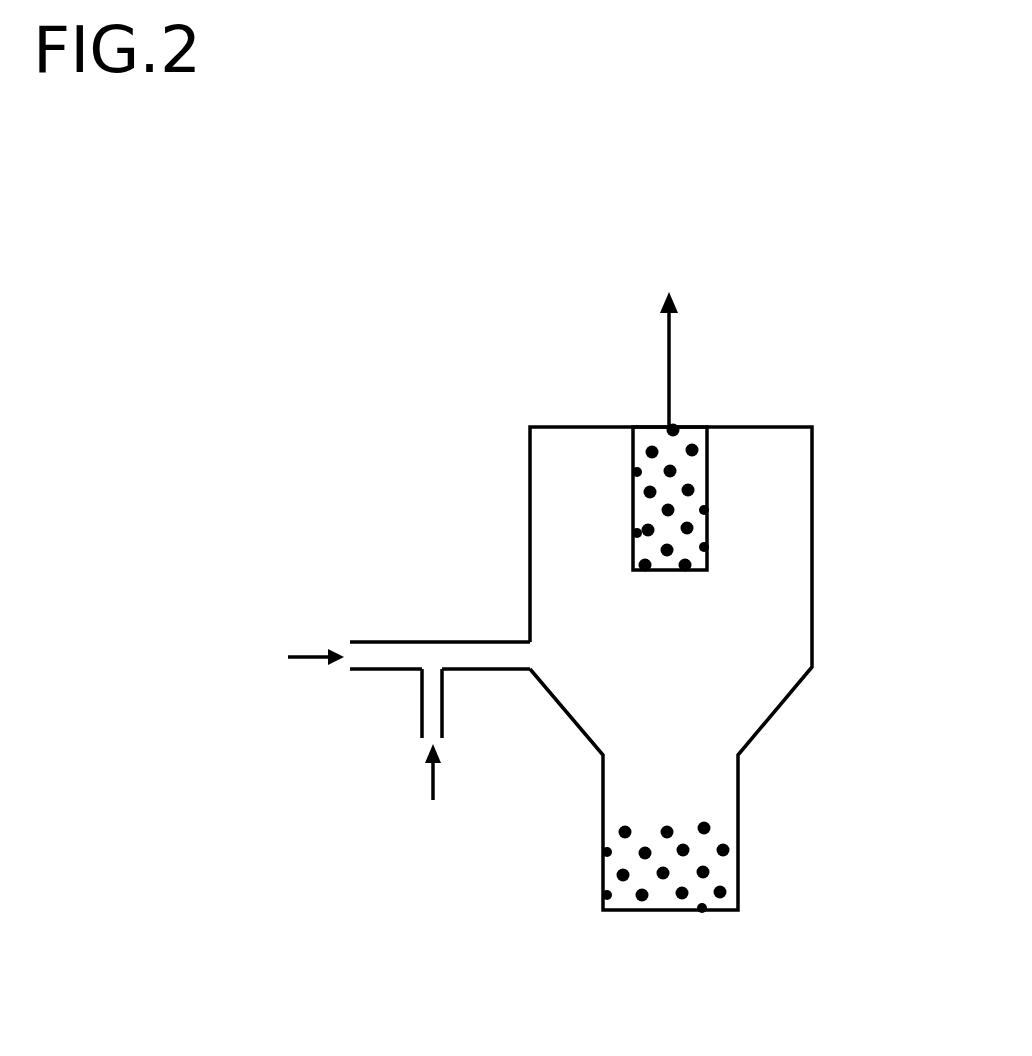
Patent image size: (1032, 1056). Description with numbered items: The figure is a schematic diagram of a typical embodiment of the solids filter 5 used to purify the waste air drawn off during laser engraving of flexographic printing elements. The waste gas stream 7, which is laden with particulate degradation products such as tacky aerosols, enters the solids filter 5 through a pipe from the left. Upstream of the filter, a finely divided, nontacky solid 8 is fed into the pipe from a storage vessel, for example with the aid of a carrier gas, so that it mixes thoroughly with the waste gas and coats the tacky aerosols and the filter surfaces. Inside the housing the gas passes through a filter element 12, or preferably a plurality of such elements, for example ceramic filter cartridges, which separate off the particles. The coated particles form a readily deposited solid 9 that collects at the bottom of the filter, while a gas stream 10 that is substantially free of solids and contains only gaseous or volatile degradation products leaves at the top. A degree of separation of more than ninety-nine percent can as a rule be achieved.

The solids filter 5 is at (572, 427).
The waste gas stream 7 is at (305, 652).
The finely divided solid 8 is at (433, 783).
The solid 9 is at (703, 875).
The gas stream 10 is at (669, 362).
The filter element 12 is at (697, 472).